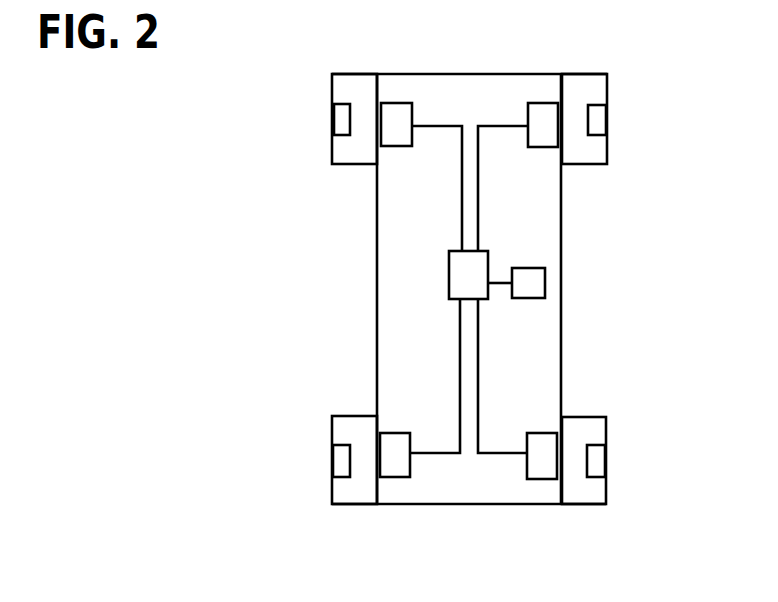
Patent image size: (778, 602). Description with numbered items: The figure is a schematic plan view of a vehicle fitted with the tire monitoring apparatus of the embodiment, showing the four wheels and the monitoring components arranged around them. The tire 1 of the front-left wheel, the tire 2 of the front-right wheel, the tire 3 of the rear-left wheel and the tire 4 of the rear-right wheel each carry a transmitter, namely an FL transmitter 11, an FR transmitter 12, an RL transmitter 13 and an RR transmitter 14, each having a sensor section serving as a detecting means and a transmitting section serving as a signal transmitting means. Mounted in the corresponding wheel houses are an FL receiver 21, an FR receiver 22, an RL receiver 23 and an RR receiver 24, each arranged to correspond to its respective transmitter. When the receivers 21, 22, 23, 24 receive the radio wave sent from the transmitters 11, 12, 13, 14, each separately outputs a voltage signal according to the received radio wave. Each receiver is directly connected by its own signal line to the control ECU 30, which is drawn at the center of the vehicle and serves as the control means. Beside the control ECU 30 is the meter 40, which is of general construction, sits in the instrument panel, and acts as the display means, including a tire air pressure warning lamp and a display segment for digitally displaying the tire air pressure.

The tire 1 is at (332, 77).
The tire 2 is at (607, 77).
The tire 3 is at (326, 502).
The tire 4 is at (606, 503).
The FL transmitter 11 is at (347, 112).
The FR transmitter 12 is at (590, 107).
The RL transmitter 13 is at (343, 468).
The RR transmitter 14 is at (593, 468).
The FL receiver 21 is at (407, 102).
The FR receiver 22 is at (533, 102).
The RL receiver 23 is at (402, 477).
The RR receiver 24 is at (532, 479).
The control ECU 30 is at (488, 255).
The meter 40 is at (545, 289).